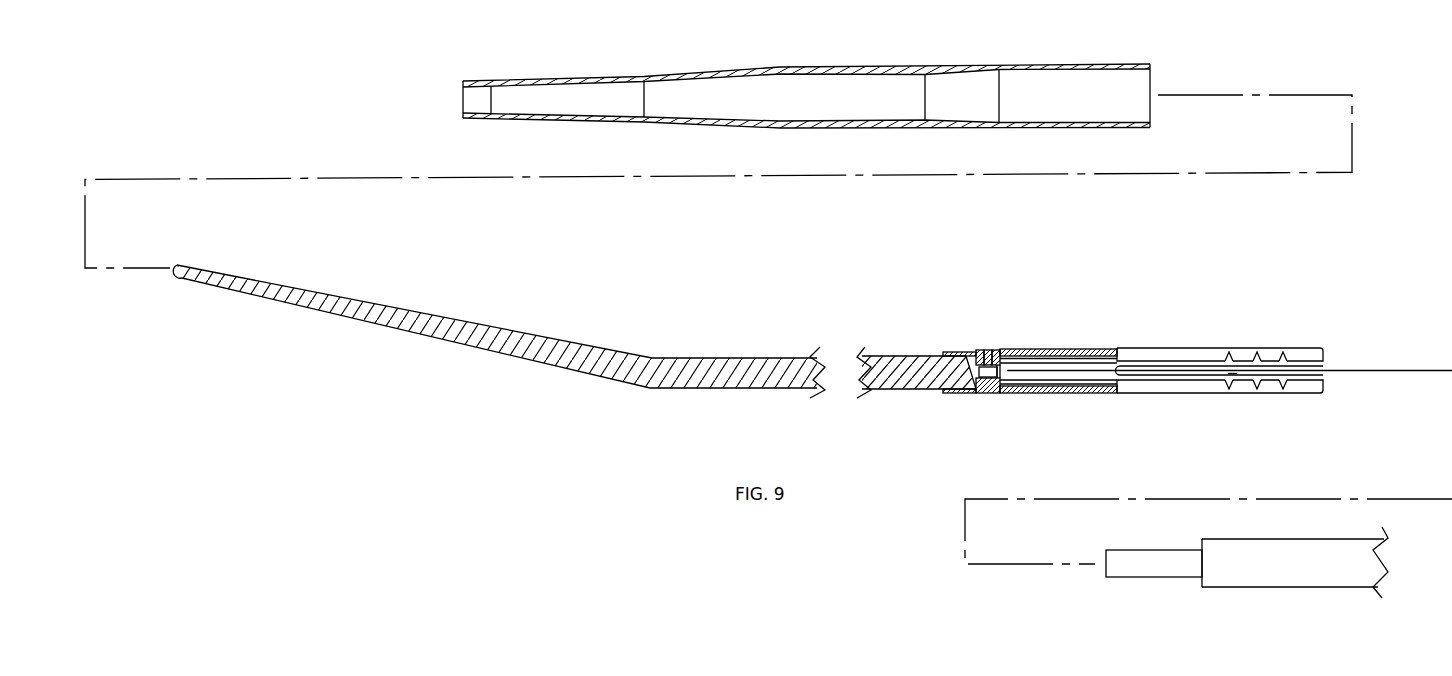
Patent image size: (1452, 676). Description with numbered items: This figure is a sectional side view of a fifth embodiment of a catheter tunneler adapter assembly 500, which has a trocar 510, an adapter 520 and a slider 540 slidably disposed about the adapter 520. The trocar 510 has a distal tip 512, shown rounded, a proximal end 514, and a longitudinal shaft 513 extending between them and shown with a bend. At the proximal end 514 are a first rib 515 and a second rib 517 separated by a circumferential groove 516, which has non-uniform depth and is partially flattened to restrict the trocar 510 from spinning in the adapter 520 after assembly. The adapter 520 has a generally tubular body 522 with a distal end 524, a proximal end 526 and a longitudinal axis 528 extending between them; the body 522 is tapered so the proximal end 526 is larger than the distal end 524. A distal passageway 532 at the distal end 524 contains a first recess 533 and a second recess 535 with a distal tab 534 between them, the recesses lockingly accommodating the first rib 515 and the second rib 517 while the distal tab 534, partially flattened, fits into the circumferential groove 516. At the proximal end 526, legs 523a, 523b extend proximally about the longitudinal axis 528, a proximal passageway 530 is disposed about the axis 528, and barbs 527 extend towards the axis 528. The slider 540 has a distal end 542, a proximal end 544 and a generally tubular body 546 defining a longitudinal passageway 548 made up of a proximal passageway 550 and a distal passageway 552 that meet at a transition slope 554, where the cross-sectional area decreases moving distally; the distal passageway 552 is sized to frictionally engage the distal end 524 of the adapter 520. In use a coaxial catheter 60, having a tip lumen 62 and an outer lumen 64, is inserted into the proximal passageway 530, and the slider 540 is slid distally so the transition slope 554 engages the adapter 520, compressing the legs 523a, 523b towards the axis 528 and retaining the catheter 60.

The catheter tunneler adapter assembly 500 is at (724, 411).
The trocar 510 is at (364, 329).
The distal tip 512 is at (174, 281).
The longitudinal shaft 513 is at (463, 335).
The proximal end 514 is at (947, 371).
The first rib 515 is at (968, 395).
The circumferential groove 516 is at (980, 396).
The second rib 517 is at (1000, 396).
The adapter 520 is at (1098, 397).
The generally tubular body 522 is at (1066, 395).
The leg 523a is at (1171, 354).
The leg 523b is at (1178, 395).
The distal end 524 is at (945, 397).
The proximal end 526 is at (1283, 389).
The barbs 527 is at (1228, 360).
The longitudinal axis 528 is at (1341, 376).
The proximal passageway 530 is at (1233, 373).
The distal passageway 532 is at (962, 352).
The first recess 533 is at (967, 351).
The distal tab 534 is at (985, 349).
The second recess 535 is at (1002, 353).
The slider 540 is at (717, 69).
The distal end 542 is at (466, 79).
The proximal end 544 is at (1153, 61).
The generally tubular body 546 is at (884, 66).
The longitudinal passageway 548 is at (788, 99).
The proximal passageway 550 is at (1081, 96).
The distal passageway 552 is at (558, 102).
The transition slope 554 is at (965, 65).
The coaxial catheter 60 is at (1287, 589).
The tip lumen 62 is at (1123, 579).
The outer lumen 64 is at (1213, 589).